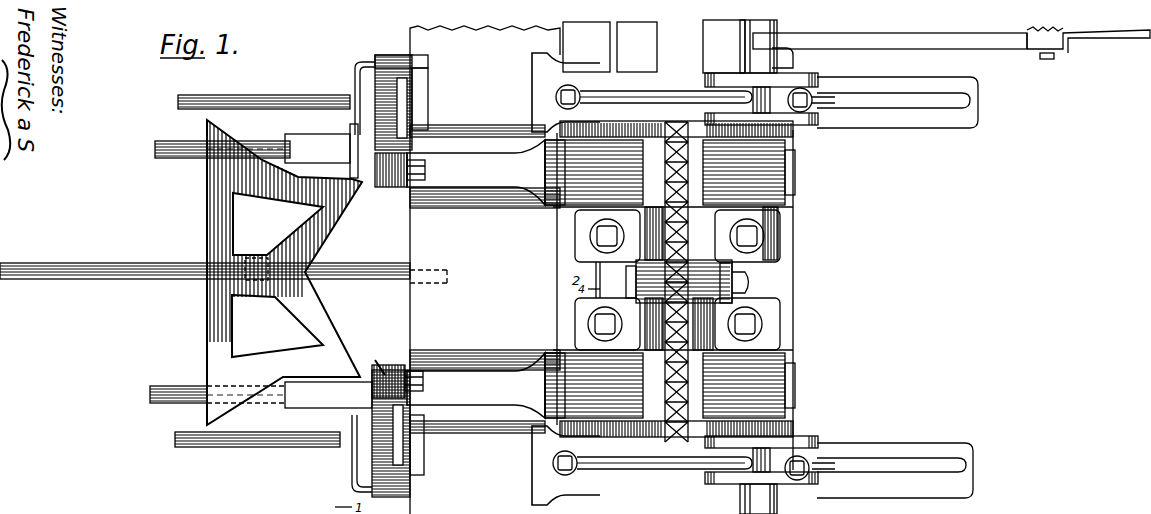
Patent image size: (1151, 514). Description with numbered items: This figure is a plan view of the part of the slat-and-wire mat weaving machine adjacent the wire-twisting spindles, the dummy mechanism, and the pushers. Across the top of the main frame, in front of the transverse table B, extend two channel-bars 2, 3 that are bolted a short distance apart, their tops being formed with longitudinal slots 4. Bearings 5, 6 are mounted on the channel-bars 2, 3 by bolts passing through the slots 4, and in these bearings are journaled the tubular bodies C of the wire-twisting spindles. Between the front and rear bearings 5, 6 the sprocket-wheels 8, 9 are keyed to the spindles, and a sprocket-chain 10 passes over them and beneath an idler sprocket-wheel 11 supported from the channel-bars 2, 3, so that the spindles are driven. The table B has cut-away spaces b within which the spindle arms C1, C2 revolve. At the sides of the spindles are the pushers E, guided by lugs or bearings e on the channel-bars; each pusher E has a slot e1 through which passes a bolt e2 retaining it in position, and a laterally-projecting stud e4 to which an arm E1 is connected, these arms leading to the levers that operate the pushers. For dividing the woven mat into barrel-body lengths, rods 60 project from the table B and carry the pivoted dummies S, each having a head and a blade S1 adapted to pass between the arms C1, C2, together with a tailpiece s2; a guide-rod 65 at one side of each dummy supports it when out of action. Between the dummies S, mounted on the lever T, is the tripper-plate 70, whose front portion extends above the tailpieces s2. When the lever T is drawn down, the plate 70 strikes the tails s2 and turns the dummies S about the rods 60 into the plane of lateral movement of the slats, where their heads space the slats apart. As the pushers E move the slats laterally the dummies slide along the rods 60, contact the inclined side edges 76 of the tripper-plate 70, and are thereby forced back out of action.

The guide-rod 65 is at (200, 97).
The inclined side edges 76 is at (227, 128).
The rods 60 is at (175, 160).
The tripper-plate 70 is at (223, 328).
The lever T is at (128, 279).
The dummies S is at (373, 88).
The blade S1 is at (417, 62).
The tailpiece s2 is at (353, 370).
The arm of spindle C1 is at (397, 187).
The arm of spindle C2 is at (476, 279).
The cut-away spaces b is at (468, 131).
The transverse table B is at (472, 281).
The channel-bar 3 is at (783, 287).
The bearing 5 is at (594, 279).
The bearing 6 is at (749, 279).
The sprocket-wheel 8 is at (684, 282).
The sprocket-wheel 9 is at (690, 383).
The sprocket-chain 10 is at (688, 233).
The idler sprocket-wheel 11 is at (688, 312).
The slots 4 is at (845, 183).
The tubular body of wire-twisting spindle C is at (752, 133).
The channel-bar 2 is at (347, 70).
The pusher E is at (540, 82).
The lugs or bearings e is at (836, 505).
The bolts e2 is at (580, 88).
The laterally-projecting stud e4 is at (747, 34).
The slots e1 is at (883, 103).
The arm E1 is at (1022, 46).